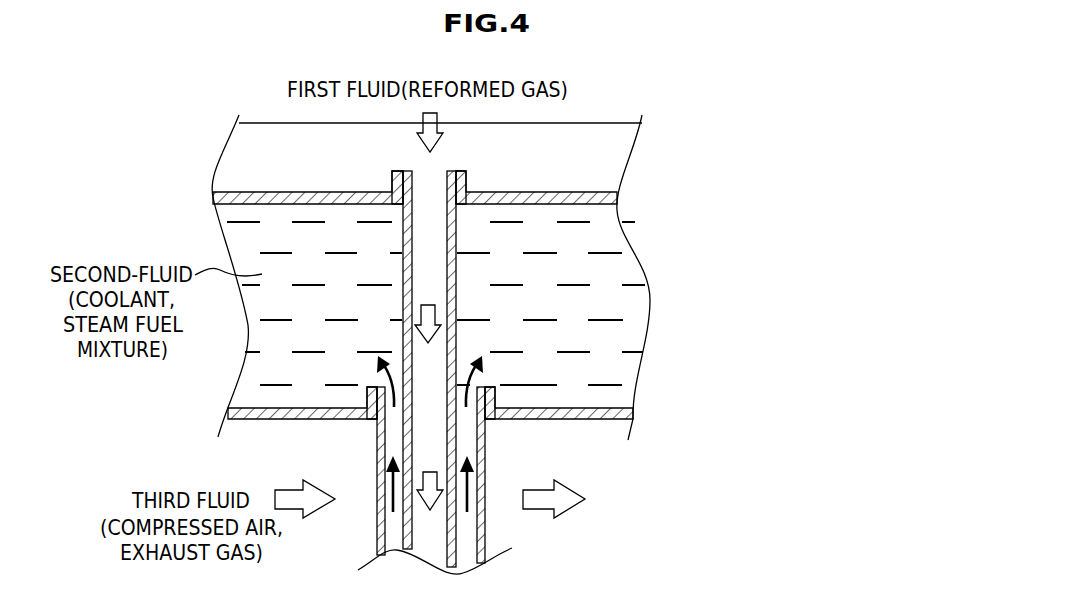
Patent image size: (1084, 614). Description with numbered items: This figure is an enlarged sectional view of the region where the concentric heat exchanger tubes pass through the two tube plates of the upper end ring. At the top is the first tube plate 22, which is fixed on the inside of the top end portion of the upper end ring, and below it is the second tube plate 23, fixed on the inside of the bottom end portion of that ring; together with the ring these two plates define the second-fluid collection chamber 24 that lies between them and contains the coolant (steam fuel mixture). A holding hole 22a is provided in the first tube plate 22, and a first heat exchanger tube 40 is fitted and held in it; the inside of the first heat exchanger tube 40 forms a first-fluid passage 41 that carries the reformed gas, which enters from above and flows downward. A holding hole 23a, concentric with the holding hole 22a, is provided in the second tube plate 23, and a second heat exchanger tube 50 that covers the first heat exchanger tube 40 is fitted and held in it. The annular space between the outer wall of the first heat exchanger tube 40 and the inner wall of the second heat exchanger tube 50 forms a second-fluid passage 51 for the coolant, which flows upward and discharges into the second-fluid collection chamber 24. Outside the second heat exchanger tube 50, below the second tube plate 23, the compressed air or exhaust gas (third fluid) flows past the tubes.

The first tube plate 22 is at (565, 192).
The holding hole 22a is at (418, 172).
The first-fluid passage 41 is at (430, 247).
The first heat exchanger tube 40 is at (458, 270).
The second-fluid collection chamber 24 is at (585, 334).
The second tube plate 23 is at (590, 408).
The holding hole 23a is at (393, 414).
The second heat exchanger tube 50 is at (484, 455).
The second-fluid passage 51 is at (465, 543).